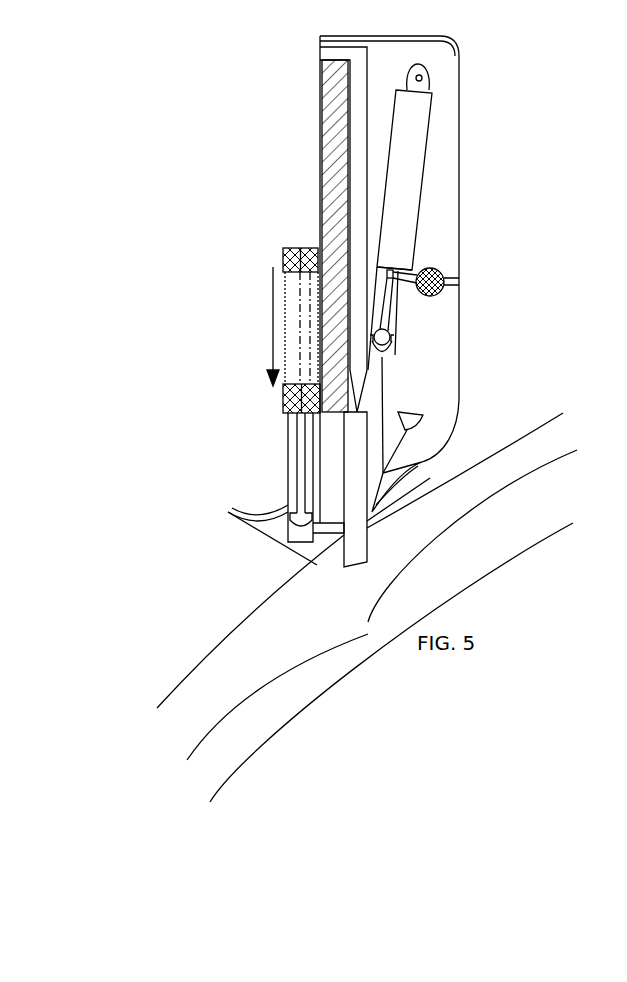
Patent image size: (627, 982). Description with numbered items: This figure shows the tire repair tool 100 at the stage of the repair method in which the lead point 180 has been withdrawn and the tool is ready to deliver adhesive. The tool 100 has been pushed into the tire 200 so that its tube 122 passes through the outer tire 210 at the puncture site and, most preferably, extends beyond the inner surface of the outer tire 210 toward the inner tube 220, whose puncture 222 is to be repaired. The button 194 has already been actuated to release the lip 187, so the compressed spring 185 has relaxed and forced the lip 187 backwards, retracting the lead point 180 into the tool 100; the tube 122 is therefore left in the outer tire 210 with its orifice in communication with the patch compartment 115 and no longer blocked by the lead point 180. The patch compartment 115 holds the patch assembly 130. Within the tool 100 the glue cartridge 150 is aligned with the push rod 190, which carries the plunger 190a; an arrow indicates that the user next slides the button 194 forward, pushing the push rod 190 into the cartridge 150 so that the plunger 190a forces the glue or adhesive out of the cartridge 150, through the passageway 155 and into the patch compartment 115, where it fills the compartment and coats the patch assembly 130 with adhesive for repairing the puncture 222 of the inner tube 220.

The tire repair tool 100 is at (460, 203).
The patch compartment 115 is at (447, 405).
The tube 122 is at (369, 543).
The patch assembly 130 is at (420, 453).
The glue cartridge 150 is at (293, 482).
The passageway 155 is at (326, 536).
The lead point 180 is at (367, 48).
The compressed spring 185 is at (332, 163).
The lip 187 is at (320, 52).
The push rod 190 is at (296, 443).
The plunger 190a is at (288, 509).
The button 194 is at (283, 400).
The tire 200 is at (223, 623).
The outer tire 210 is at (176, 691).
The inner tube 220 is at (185, 762).
The puncture 222 is at (369, 634).